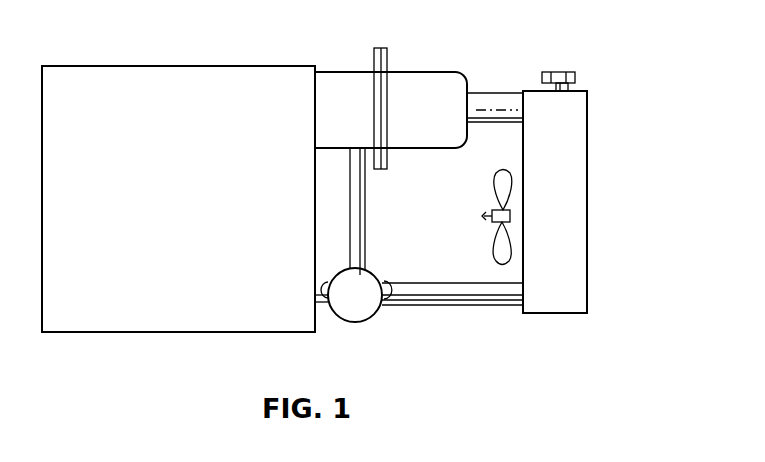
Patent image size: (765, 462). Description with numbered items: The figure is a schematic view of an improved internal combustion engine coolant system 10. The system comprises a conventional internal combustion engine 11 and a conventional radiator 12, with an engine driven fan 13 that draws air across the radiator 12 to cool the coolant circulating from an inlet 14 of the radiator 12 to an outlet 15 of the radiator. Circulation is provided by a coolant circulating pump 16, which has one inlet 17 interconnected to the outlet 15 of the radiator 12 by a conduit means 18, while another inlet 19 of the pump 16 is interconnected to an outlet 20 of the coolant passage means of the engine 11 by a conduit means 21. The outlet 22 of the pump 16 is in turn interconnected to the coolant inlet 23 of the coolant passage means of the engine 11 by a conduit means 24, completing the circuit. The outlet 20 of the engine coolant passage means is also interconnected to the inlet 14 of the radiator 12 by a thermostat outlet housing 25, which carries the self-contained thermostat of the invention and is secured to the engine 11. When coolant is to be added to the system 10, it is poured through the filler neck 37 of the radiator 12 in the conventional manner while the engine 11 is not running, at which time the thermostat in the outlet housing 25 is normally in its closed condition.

The internal combustion engine coolant system 10 is at (612, 117).
The internal combustion engine 11 is at (200, 75).
The radiator 12 is at (583, 222).
The engine driven fan 13 is at (500, 250).
The inlet of the radiator 14 is at (523, 102).
The outlet of the radiator 15 is at (520, 298).
The coolant circulating pump 16 is at (365, 306).
The inlet of the pump 17 is at (388, 281).
The conduit means 18 is at (465, 300).
The inlet of the pump 19 is at (360, 266).
The outlet of the coolant passage means 20 is at (357, 150).
The conduit means 21 is at (366, 200).
The outlet of the pump 22 is at (327, 300).
The coolant inlet of the coolant passage means 23 is at (320, 283).
The conduit means 24 is at (322, 278).
The thermostat outlet housing 25 is at (423, 72).
The filler neck 37 is at (572, 86).